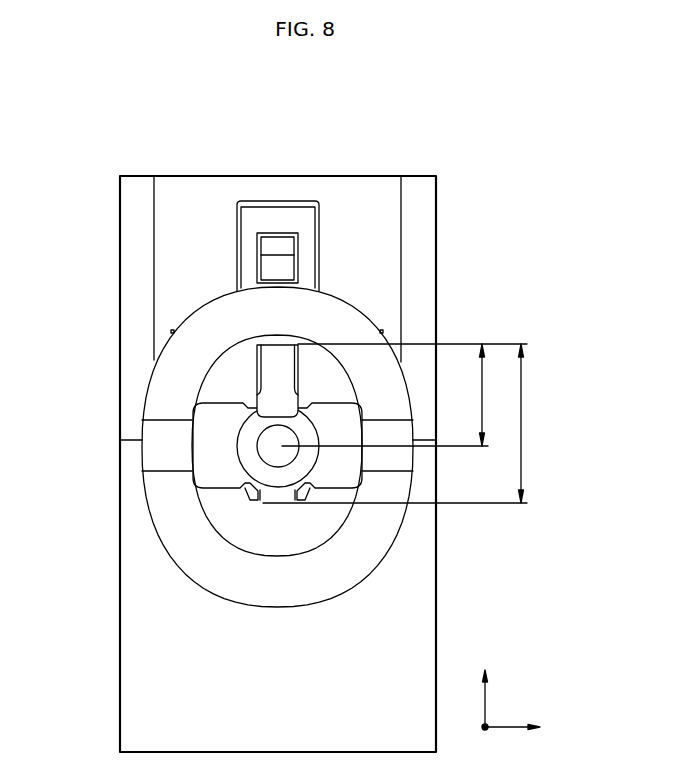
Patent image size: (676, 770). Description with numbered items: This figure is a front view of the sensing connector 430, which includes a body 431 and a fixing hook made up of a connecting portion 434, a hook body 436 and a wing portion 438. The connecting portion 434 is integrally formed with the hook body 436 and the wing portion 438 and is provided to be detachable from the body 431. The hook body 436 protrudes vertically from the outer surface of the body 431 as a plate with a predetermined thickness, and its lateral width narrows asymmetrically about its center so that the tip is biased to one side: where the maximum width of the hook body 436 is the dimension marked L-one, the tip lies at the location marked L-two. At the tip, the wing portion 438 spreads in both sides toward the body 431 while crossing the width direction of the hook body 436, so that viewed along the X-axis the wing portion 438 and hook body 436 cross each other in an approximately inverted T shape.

The sensing connector 430 is at (137, 98).
The body 431 is at (202, 190).
The connecting portion 434 is at (217, 563).
The hook body 436 is at (277, 368).
The wing portion 438 is at (217, 447).